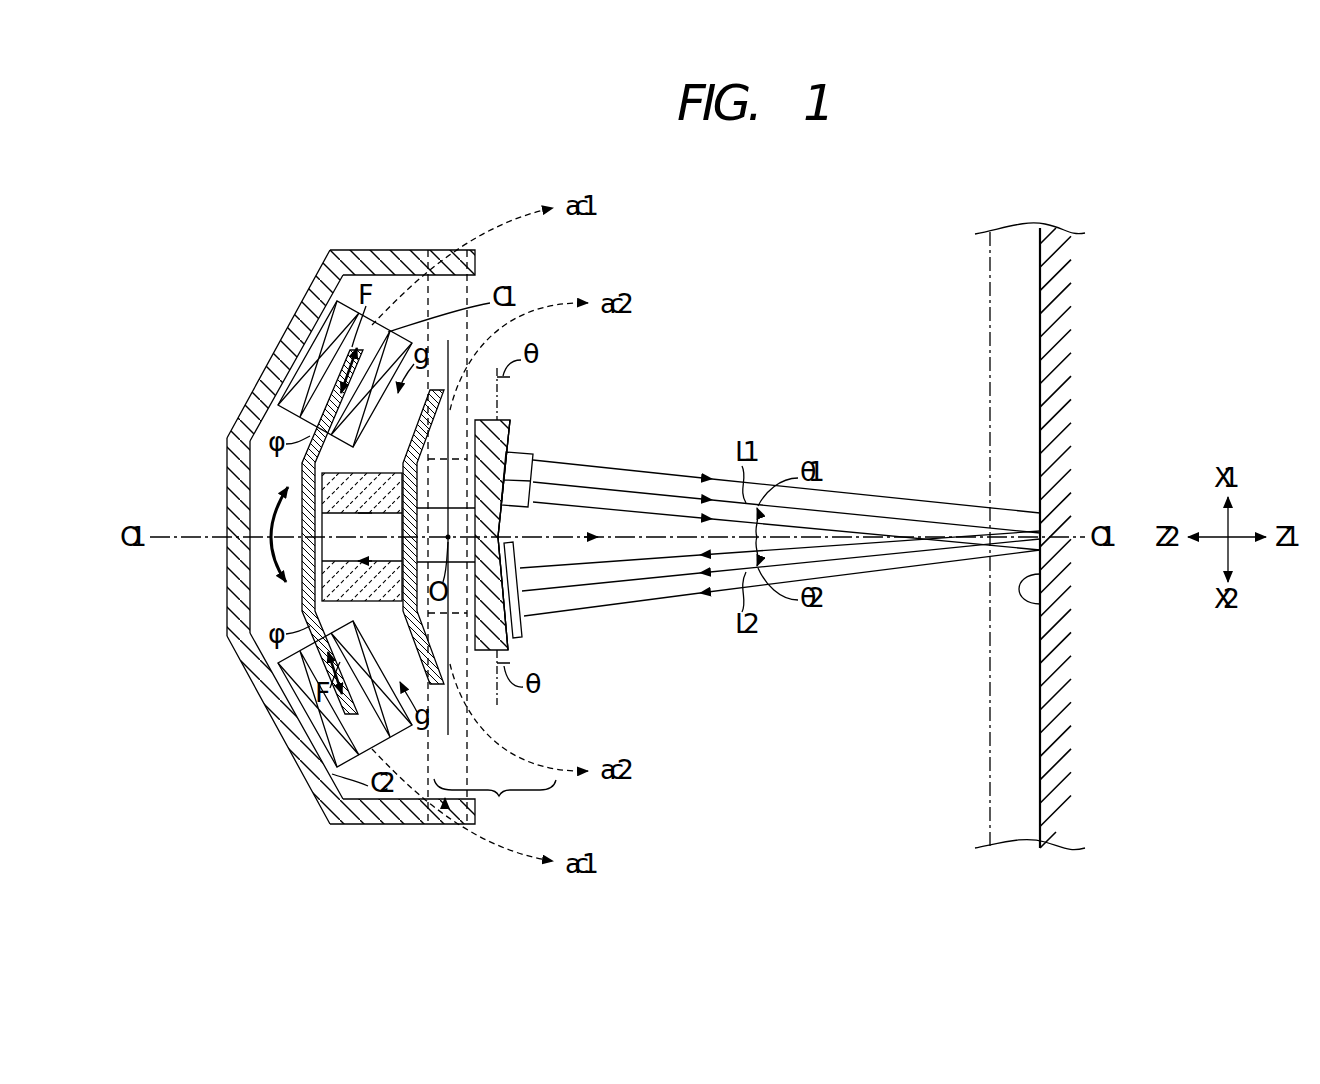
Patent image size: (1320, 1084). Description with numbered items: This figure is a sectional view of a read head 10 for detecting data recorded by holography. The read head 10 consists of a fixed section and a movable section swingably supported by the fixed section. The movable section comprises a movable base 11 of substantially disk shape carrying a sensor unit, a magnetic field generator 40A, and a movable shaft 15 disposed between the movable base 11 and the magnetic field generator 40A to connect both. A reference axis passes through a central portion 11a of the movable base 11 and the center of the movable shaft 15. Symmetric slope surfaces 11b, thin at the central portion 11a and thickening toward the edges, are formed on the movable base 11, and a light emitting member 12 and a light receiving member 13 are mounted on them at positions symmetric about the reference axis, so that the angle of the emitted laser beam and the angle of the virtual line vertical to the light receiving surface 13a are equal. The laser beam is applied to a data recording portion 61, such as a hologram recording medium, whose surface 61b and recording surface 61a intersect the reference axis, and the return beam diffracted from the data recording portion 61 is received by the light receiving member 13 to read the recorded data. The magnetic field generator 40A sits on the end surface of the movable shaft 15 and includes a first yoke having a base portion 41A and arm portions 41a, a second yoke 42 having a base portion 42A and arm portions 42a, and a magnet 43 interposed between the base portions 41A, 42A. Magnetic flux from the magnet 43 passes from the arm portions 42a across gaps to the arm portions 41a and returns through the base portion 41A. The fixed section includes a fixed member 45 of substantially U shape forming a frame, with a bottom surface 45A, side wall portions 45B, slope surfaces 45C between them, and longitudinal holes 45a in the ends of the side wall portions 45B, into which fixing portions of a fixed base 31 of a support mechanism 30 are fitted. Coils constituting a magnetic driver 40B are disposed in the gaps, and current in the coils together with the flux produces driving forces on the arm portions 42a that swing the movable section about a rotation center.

The read head 10 is at (693, 318).
The movable base 11 is at (505, 418).
The central portion 11a is at (508, 537).
The slope surfaces 11b is at (512, 440).
The light emitting member 12 is at (532, 462).
The light receiving member 13 is at (524, 622).
The light receiving surface 13a is at (524, 570).
The movable shaft 15 is at (455, 600).
The support mechanism 30 is at (500, 418).
The fixed base 31 is at (450, 832).
The magnetic field generator 40A is at (474, 816).
The magnetic driver 40B is at (344, 288).
The base portion 41A is at (392, 603).
The arm portions 41a is at (442, 386).
The second yoke 42 is at (298, 600).
The base portion 42A is at (306, 574).
The arm portions 42a is at (360, 342).
The magnet 43 is at (374, 473).
The fixed member 45 is at (248, 392).
The bottom surface 45A is at (227, 515).
The side wall portions 45B is at (398, 250).
The slope surfaces 45C is at (300, 322).
The longitudinal holes 45a is at (428, 262).
The data recording portion 61 is at (1018, 850).
The recording surface 61a is at (1040, 597).
The surface 61b is at (988, 808).